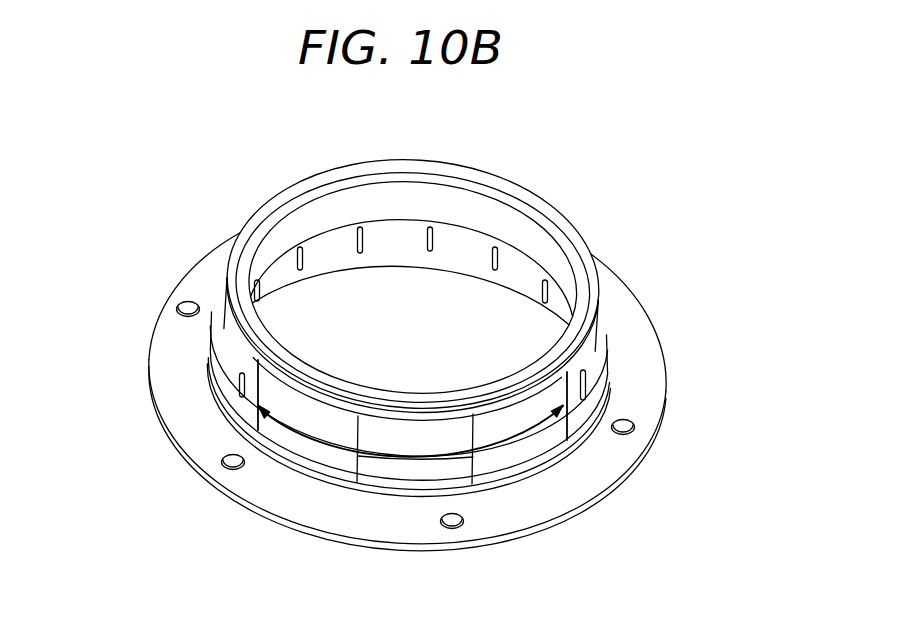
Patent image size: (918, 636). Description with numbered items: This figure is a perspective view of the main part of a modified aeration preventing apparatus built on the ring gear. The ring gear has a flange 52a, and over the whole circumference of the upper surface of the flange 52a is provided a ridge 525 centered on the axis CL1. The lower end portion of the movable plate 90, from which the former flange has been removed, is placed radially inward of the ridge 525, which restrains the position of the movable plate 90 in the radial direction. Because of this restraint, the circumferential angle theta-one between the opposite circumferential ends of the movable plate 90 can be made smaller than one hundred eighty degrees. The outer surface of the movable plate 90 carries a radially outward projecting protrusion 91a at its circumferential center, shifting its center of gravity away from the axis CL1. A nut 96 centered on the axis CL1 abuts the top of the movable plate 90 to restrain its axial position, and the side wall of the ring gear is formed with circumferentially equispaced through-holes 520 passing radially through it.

The nut 96 is at (560, 223).
The movable plate 90 is at (287, 440).
The protrusion 91a is at (403, 477).
The ridge 525 is at (215, 360).
The through-holes 520 is at (586, 385).
The flange 52a is at (630, 367).
The axis CL1 is at (408, 395).